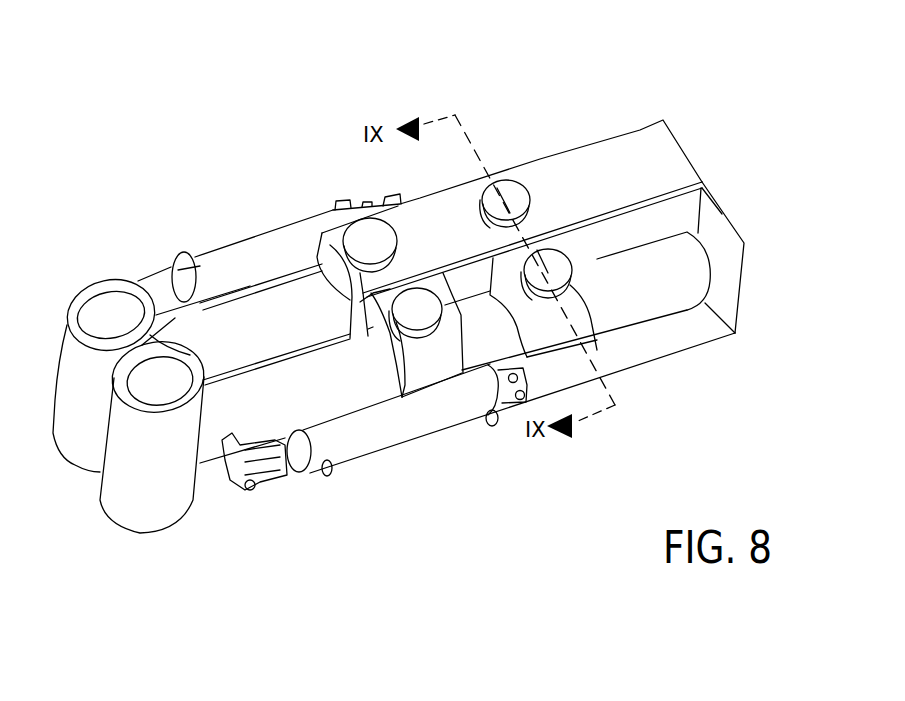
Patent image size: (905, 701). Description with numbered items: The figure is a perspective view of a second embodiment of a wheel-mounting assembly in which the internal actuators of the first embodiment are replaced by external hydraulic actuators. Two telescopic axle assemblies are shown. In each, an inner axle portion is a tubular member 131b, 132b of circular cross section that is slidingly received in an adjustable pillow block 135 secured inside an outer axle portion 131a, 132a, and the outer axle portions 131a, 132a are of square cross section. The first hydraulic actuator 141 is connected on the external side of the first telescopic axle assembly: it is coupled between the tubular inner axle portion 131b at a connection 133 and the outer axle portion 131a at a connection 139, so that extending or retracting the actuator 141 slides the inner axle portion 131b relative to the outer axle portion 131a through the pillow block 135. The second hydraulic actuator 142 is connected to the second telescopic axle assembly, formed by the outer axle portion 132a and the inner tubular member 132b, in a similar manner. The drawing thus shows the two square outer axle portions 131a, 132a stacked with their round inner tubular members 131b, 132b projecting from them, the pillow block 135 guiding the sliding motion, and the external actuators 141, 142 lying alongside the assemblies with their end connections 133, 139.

The outer axle portion 131a is at (723, 216).
The tubular inner axle portion 131b is at (281, 407).
The outer axle portion 132a is at (640, 129).
The tubular inner axle portion 132b is at (213, 338).
The connection 133 is at (240, 496).
The adjustable pillow block 135 is at (583, 303).
The connection 139 is at (525, 403).
The first hydraulic actuator 141 is at (403, 441).
The second hydraulic actuator 142 is at (250, 241).